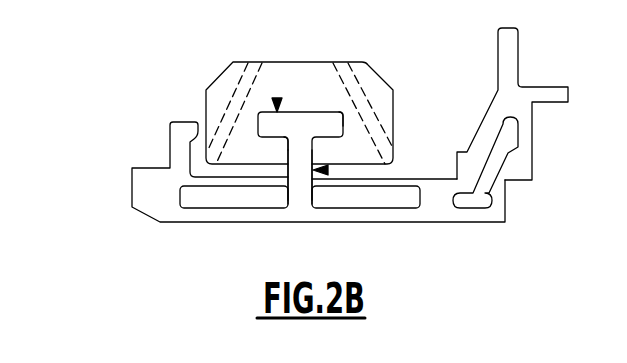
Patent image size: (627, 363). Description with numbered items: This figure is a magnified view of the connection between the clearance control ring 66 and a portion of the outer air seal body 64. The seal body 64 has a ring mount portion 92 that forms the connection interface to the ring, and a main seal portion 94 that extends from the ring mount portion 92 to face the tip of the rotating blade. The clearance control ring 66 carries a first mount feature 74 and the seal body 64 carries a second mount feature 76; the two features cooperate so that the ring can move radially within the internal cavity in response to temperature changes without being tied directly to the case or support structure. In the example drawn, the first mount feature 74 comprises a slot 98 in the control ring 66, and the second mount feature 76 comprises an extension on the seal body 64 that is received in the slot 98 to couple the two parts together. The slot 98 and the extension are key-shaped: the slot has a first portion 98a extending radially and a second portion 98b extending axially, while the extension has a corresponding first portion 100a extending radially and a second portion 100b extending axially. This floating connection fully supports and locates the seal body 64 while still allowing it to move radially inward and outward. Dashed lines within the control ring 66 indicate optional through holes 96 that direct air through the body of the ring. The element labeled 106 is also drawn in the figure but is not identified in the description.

The outer air seal body 64 is at (510, 68).
The clearance control ring 66 is at (367, 62).
The first mount feature 74 is at (277, 99).
The second mount feature 76 is at (327, 170).
The ring mount portion 92 is at (313, 126).
The main seal portion 94 is at (442, 212).
The through holes 96 is at (243, 78).
The slot 98 is at (276, 138).
The first portion of slot 98a is at (287, 143).
The second portion of slot 98b is at (330, 108).
The first portion of extension 100a is at (343, 232).
The second portion of extension 100b is at (333, 128).
The neck 106 is at (293, 163).